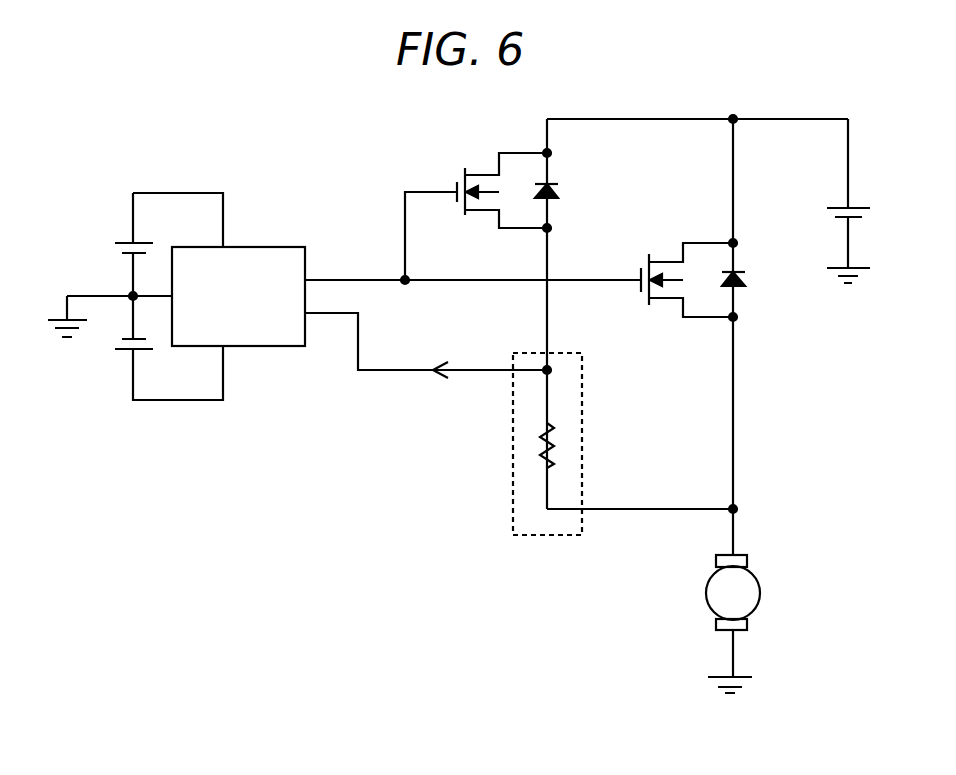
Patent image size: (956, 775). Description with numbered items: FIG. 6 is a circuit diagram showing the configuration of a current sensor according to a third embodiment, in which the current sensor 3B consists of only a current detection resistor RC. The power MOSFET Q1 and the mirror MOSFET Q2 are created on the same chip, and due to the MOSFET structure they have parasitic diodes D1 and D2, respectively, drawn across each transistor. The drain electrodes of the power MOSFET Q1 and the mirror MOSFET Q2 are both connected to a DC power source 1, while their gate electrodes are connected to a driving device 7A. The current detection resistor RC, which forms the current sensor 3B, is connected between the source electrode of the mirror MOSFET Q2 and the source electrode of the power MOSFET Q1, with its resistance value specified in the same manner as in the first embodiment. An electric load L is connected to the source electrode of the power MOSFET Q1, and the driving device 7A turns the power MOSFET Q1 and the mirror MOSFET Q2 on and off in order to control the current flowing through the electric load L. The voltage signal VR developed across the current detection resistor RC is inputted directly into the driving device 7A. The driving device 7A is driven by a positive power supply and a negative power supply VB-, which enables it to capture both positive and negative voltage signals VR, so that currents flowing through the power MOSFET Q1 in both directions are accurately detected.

The negative power supply VB- is at (118, 350).
The driving device 7A is at (258, 247).
The mirror MOSFET Q2 is at (475, 172).
The parasitic diode D2 is at (558, 190).
The DC power source 1 is at (858, 207).
The power MOSFET Q1 is at (667, 298).
The parasitic diode D1 is at (745, 278).
The voltage signal VR is at (438, 378).
The current detection resistor RC is at (556, 445).
The current sensor 3B is at (545, 538).
The electric load L is at (760, 588).